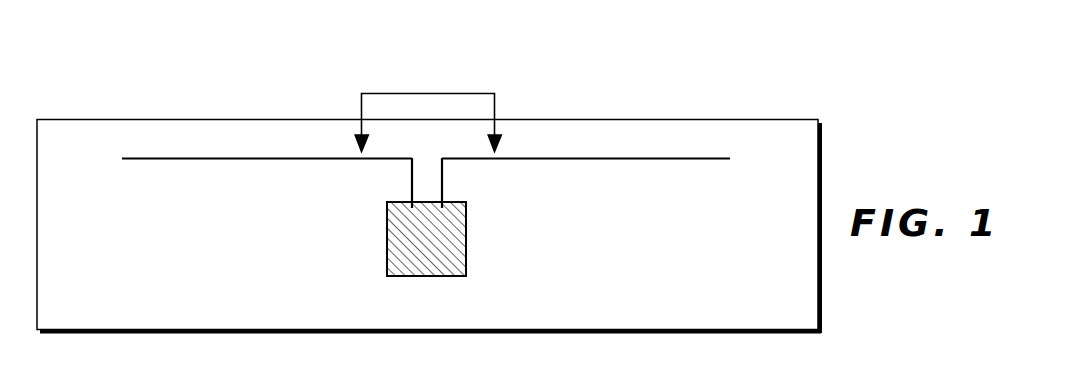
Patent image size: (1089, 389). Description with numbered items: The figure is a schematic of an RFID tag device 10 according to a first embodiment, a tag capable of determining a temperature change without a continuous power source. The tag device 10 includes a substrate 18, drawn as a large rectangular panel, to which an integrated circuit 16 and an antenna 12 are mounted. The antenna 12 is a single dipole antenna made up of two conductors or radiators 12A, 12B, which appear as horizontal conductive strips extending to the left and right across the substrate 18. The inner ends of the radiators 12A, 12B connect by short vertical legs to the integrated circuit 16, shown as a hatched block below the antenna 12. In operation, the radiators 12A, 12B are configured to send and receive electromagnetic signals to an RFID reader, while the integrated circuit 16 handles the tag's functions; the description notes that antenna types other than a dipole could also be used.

The RFID tag device 10 is at (522, 55).
The antenna 12 is at (428, 93).
The conductor or radiator 12A is at (265, 158).
The conductor or radiator 12B is at (578, 158).
The integrated circuit 16 is at (466, 239).
The substrate 18 is at (713, 120).